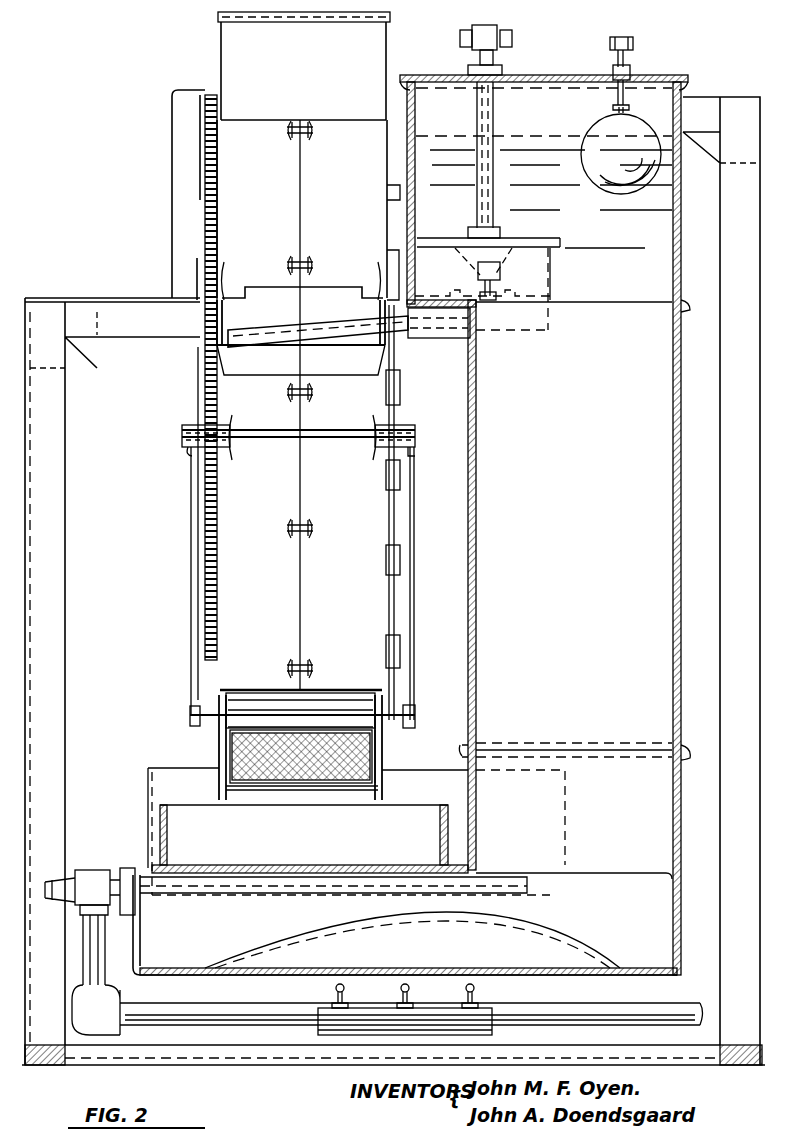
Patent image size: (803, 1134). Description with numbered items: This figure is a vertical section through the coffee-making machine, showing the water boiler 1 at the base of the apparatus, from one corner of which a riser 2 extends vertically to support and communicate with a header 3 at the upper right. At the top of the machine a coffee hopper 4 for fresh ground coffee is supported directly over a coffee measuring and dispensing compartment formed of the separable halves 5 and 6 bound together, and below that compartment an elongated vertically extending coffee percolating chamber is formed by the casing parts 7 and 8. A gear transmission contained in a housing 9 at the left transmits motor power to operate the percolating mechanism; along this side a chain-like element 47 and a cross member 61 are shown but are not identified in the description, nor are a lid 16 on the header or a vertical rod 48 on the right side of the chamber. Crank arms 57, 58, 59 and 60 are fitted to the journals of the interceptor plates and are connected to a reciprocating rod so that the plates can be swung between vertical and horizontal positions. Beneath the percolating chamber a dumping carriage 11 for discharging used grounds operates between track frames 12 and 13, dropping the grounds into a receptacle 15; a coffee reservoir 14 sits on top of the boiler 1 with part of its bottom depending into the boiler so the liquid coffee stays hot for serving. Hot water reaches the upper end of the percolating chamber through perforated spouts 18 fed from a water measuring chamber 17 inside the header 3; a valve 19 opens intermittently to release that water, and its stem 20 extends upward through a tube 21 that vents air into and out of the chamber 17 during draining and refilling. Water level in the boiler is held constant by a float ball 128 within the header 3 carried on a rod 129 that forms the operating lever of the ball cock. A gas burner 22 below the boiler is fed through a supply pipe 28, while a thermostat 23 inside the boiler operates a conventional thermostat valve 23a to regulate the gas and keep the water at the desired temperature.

The water boiler 1 is at (679, 860).
The riser 2 is at (680, 530).
The header 3 is at (681, 218).
The coffee hopper 4 is at (370, 66).
The separable half 5 is at (233, 275).
The separable half 6 is at (376, 242).
The casing part 7 is at (222, 616).
The casing part 8 is at (384, 608).
The housing 9 is at (180, 186).
The dumping carriage 11 is at (302, 710).
The track frame 12 is at (220, 750).
The track frame 13 is at (383, 750).
The coffee reservoir 14 is at (148, 796).
The receptacle 15 is at (167, 842).
The lid 16 is at (532, 76).
The water measuring chamber 17 is at (575, 228).
The perforated spouts 18 is at (365, 330).
The valve 19 is at (508, 298).
The stem 20 is at (480, 257).
The tube 21 is at (478, 207).
The gas burner 22 is at (476, 997).
The thermostat 23 is at (150, 895).
The thermostat valve 23a is at (92, 870).
The supply pipe 28 is at (668, 1012).
The chain 47 is at (195, 490).
The rod 48 is at (412, 521).
The crank arm 57 is at (400, 388).
The crank arm 58 is at (400, 478).
The crank arm 59 is at (400, 565).
The crank arm 60 is at (397, 660).
The cross bar 61 is at (344, 440).
The float ball 128 is at (600, 130).
The rod 129 is at (628, 55).